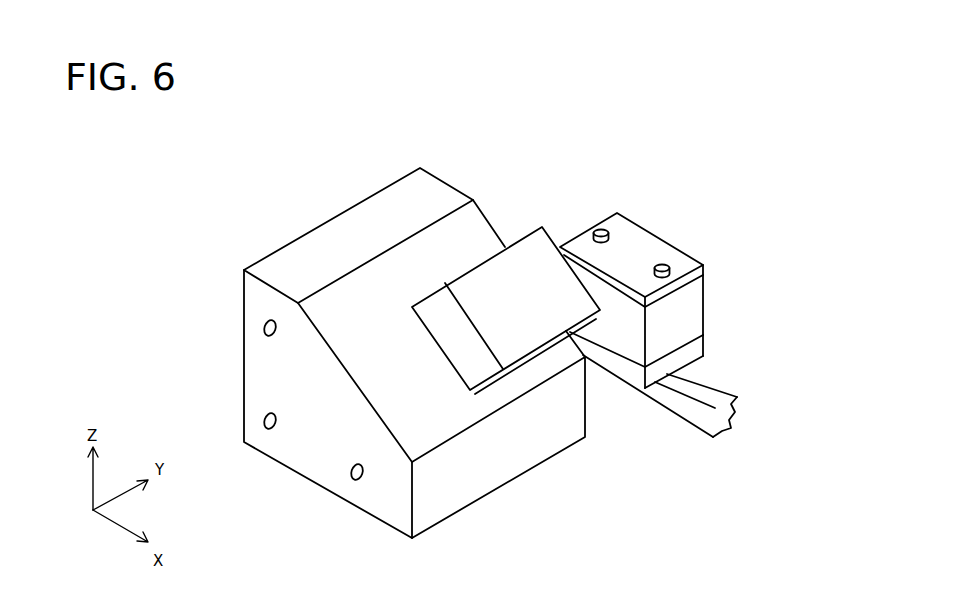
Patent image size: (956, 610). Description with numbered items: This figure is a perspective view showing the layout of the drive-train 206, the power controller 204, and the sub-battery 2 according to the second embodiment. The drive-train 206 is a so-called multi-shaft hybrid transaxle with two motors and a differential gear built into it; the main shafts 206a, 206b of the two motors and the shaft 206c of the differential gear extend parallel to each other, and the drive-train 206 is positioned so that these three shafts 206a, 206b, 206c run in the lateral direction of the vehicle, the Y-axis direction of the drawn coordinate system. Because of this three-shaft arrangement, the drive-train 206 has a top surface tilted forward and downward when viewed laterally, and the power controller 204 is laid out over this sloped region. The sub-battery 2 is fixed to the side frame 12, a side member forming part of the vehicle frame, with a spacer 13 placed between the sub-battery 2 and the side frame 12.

The drive-train 206 is at (347, 225).
The main shaft 206a is at (264, 328).
The main shaft 206b is at (268, 430).
The shaft of the differential gear 206c is at (357, 480).
The power controller 204 is at (527, 253).
The sub-battery 2 is at (647, 238).
The spacer 13 is at (699, 345).
The side frame 12 is at (729, 409).